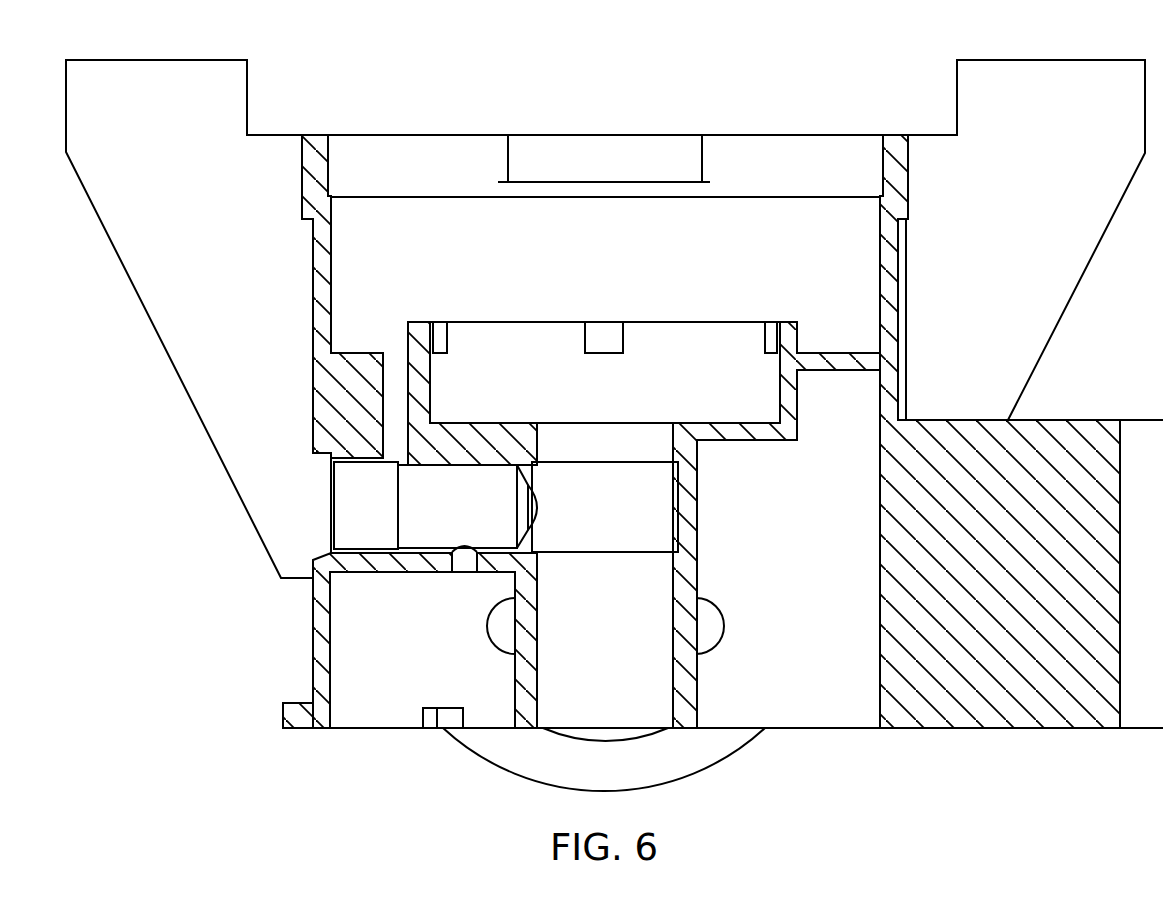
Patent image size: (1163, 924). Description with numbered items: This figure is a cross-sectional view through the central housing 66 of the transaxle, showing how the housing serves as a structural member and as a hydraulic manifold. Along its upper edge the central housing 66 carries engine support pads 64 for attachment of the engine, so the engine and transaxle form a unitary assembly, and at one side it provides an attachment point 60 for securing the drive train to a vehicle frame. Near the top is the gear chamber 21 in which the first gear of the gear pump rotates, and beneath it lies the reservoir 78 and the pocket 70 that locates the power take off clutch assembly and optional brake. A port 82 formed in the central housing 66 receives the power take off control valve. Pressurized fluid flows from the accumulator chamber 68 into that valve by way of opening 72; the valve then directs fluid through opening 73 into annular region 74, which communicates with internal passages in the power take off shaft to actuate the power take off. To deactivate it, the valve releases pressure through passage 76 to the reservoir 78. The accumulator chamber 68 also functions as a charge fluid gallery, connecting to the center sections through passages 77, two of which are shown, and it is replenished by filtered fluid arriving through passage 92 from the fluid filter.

The gear chamber 21 is at (427, 176).
The attachment points 60 is at (1145, 436).
The engine support pads 64 is at (157, 60).
The central housing 66 is at (1000, 730).
The accumulator chamber 68 is at (362, 651).
The pocket 70 is at (590, 399).
The opening 72 is at (464, 558).
The opening 73 is at (528, 506).
The annular region 74 is at (590, 519).
The passage 76 is at (397, 362).
The passages 77 is at (505, 632).
The reservoir 78 is at (590, 269).
The port 82 is at (355, 505).
The passage 92 is at (450, 715).